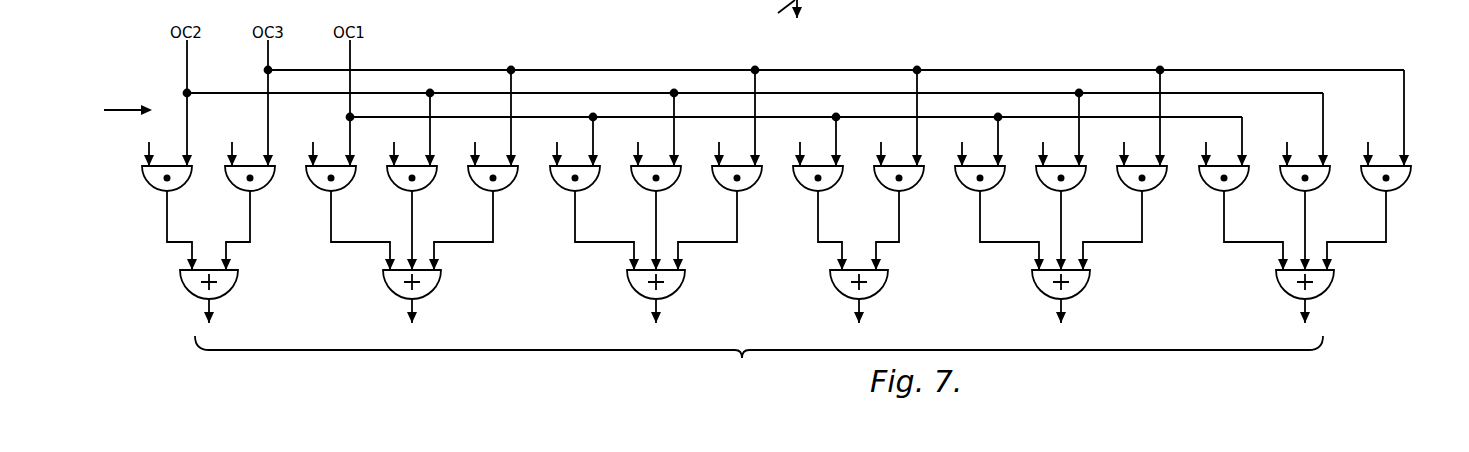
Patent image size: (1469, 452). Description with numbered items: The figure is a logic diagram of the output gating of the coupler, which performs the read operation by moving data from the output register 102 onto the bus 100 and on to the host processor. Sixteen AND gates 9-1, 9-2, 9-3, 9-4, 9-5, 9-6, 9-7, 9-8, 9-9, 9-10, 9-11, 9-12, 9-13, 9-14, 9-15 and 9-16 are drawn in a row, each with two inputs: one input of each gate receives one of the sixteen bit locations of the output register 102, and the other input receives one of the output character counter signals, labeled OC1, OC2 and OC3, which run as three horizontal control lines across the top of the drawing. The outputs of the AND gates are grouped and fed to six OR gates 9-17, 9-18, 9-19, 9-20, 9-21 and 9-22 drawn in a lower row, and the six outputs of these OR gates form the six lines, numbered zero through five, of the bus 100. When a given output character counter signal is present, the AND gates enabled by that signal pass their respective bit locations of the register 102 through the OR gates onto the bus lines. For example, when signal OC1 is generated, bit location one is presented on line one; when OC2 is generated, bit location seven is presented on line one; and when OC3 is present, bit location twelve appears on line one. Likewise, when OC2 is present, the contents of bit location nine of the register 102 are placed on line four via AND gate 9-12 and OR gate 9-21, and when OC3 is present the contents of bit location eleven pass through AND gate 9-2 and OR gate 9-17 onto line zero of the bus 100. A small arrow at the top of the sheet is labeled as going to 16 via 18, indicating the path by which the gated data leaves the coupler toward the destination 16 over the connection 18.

The AND gate 9-1 is at (177, 189).
The AND gate 9-2 is at (260, 189).
The AND gate 9-3 is at (341, 189).
The AND gate 9-4 is at (422, 189).
The AND gate 9-5 is at (503, 189).
The AND gate 9-6 is at (585, 189).
The AND gate 9-7 is at (666, 189).
The AND gate 9-8 is at (747, 189).
The AND gate 9-9 is at (828, 189).
The AND gate 9-10 is at (909, 189).
The AND gate 9-11 is at (990, 189).
The AND gate 9-12 is at (1071, 189).
The AND gate 9-13 is at (1152, 189).
The AND gate 9-14 is at (1234, 189).
The AND gate 9-15 is at (1315, 189).
The AND gate 9-16 is at (1396, 189).
The OR gate 9-17 is at (229, 290).
The OR gate 9-18 is at (432, 290).
The OR gate 9-19 is at (676, 290).
The OR gate 9-20 is at (879, 290).
The OR gate 9-21 is at (1081, 290).
The OR gate 9-22 is at (1325, 290).
The bus 100 is at (759, 361).
The output register 102 is at (134, 91).
The destination unit 16 is at (786, 6).
The connection path 18 is at (846, 13).